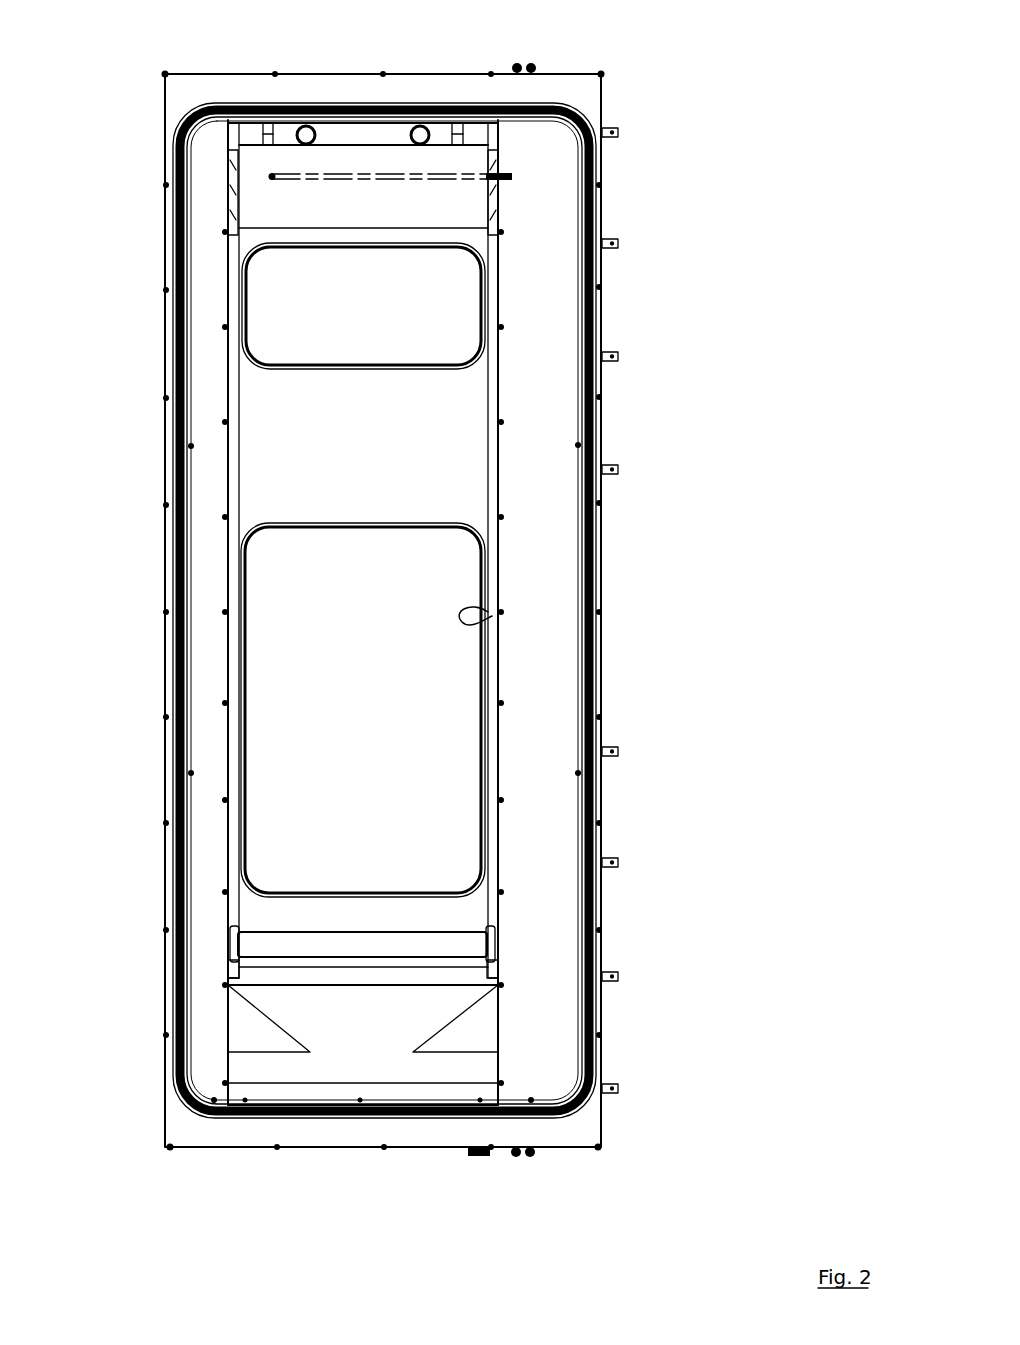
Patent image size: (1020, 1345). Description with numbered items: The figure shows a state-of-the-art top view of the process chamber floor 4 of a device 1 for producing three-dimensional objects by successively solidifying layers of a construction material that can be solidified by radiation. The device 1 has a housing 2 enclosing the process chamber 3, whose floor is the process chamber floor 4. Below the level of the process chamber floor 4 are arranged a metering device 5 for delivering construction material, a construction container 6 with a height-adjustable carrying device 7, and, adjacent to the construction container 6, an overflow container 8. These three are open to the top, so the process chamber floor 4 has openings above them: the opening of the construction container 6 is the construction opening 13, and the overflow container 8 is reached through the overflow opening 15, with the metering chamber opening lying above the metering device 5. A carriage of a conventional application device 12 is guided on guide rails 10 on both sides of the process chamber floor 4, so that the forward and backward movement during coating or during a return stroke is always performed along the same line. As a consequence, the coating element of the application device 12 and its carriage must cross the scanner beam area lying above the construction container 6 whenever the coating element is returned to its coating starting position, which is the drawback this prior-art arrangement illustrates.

The device 1 is at (672, 383).
The housing 2 is at (568, 72).
The process chamber 3 is at (558, 548).
The process chamber floor 4 is at (348, 440).
The metering device 5 is at (438, 304).
The construction container 6 is at (428, 690).
The carrying device 7 is at (428, 735).
The overflow container 8 is at (423, 940).
The guide rails 10 is at (495, 435).
The application device 12 is at (287, 203).
The opening of the construction container 13 is at (480, 620).
The overflow opening 15 is at (300, 930).